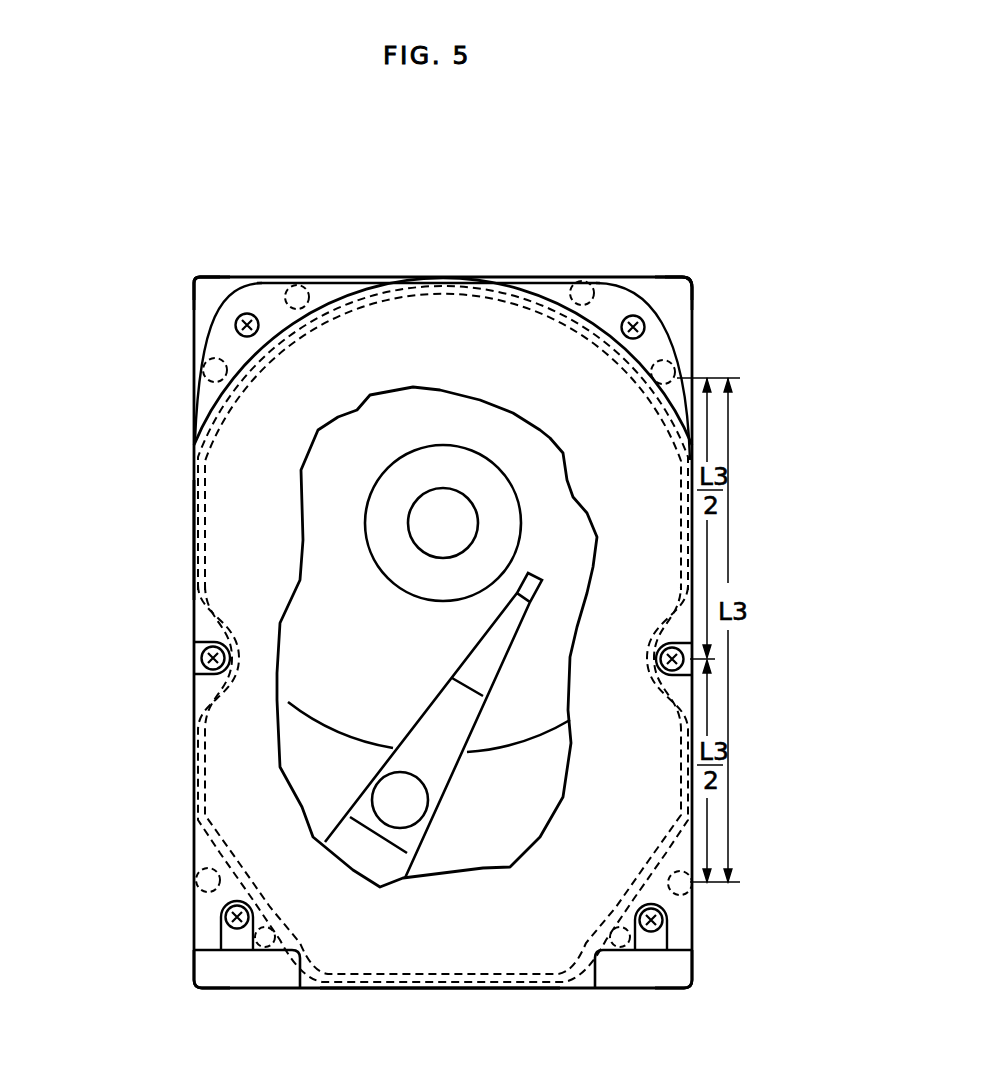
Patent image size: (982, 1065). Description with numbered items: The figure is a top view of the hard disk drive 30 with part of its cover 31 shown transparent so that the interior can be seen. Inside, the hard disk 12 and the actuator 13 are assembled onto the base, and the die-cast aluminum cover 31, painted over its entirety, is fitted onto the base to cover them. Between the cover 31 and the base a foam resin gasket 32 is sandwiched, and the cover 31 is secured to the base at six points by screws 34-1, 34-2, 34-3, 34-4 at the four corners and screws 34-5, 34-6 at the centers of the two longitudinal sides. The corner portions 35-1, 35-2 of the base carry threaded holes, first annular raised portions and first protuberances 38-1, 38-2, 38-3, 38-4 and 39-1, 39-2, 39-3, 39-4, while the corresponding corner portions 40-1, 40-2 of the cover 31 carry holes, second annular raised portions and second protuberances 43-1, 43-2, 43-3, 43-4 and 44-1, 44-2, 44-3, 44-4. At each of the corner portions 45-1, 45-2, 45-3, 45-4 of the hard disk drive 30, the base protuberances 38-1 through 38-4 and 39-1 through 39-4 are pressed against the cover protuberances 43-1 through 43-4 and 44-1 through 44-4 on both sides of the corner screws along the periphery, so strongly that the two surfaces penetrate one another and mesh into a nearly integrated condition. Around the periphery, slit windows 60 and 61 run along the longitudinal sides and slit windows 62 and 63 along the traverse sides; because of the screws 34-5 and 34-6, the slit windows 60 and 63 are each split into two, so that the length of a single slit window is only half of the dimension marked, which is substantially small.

The hard disk drive 30 is at (604, 125).
The cover 31 is at (524, 274).
The foam resin gasket 32 is at (703, 546).
The slit window 60 is at (695, 590).
The slit window 61 is at (445, 281).
The slit window 62 is at (192, 538).
The slit window 63 is at (460, 986).
The hard disk 12 is at (513, 723).
The actuator 13 is at (397, 867).
The screw 34-1 is at (636, 316).
The screw 34-2 is at (234, 320).
The screw 34-3 is at (221, 928).
The screw 34-4 is at (667, 920).
The screw 34-5 is at (684, 659).
The screw 34-6 is at (201, 658).
The corner portion 35-1 is at (688, 290).
The corner portion 35-2 is at (198, 340).
The first protuberance 38-1 is at (740, 380).
The first protuberance 38-2 is at (330, 272).
The first protuberance 38-3 is at (194, 858).
The first protuberance 38-4 is at (608, 952).
The first protuberance 39-1 is at (565, 283).
The first protuberance 39-2 is at (192, 400).
The first protuberance 39-3 is at (273, 945).
The first protuberance 39-4 is at (696, 862).
The corner portion 40-1 is at (670, 300).
The corner portion 40-2 is at (255, 281).
The second protuberance 43-1 is at (676, 352).
The second protuberance 43-2 is at (298, 284).
The second protuberance 43-3 is at (196, 884).
The second protuberance 43-4 is at (657, 952).
The second protuberance 44-1 is at (599, 284).
The second protuberance 44-2 is at (203, 364).
The second protuberance 44-3 is at (258, 948).
The second protuberance 44-4 is at (693, 886).
The corner portion 45-1 is at (697, 316).
The corner portion 45-2 is at (222, 266).
The corner portion 45-3 is at (190, 958).
The corner portion 45-4 is at (698, 951).